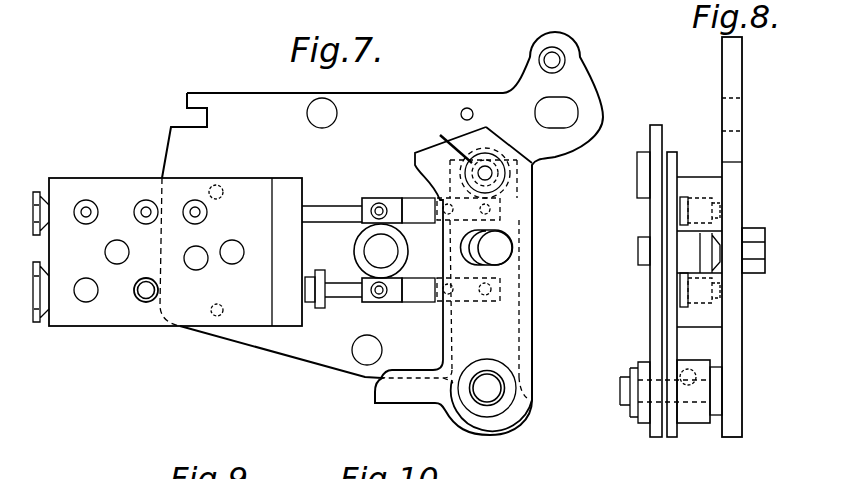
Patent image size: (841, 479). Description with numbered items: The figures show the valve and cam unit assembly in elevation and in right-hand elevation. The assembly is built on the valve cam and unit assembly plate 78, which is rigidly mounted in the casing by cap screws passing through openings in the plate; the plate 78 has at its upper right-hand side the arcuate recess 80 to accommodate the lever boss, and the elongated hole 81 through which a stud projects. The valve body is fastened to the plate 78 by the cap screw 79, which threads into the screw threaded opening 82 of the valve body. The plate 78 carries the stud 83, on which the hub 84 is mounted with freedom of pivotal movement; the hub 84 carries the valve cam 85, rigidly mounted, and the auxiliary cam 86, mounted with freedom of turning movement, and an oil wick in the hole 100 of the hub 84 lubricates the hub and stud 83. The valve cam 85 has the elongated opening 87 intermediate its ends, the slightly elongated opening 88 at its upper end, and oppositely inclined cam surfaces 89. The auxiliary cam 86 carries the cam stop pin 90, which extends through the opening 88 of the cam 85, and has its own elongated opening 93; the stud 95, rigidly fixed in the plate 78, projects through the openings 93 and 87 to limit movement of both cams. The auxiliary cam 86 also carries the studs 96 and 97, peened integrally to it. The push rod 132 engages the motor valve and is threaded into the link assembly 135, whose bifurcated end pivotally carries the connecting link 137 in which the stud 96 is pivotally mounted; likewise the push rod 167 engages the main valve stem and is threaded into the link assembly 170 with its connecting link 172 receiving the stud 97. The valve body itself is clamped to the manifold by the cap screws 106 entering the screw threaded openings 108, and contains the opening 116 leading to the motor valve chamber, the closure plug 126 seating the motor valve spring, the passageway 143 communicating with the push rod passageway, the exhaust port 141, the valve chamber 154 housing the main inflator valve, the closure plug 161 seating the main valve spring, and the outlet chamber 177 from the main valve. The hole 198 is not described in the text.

In FIG. 7, the valve cam and unit assembly plate 78 is at (428, 93).
In FIG. 8, the valve cam and unit assembly plate 78 is at (743, 345).
In FIG. 8, the cap screw 79 is at (758, 255).
In FIG. 7, the arcuate recess 80 is at (500, 207).
In FIG. 7, the elongated hole 81 is at (536, 118).
In FIG. 8, the elongated hole 81 is at (736, 100).
In FIG. 7, the screw threaded opening 82 is at (196, 270).
In FIG. 7, the stud 83 is at (501, 392).
In FIG. 8, the stud 83 is at (688, 425).
In FIG. 8, the hub 84 is at (703, 423).
In FIG. 7, the valve cam 85 is at (533, 335).
In FIG. 8, the valve cam 85 is at (652, 315).
In FIG. 7, the auxiliary cam 86 is at (522, 353).
In FIG. 8, the auxiliary cam 86 is at (677, 158).
In FIG. 7, the elongated opening 87 is at (512, 252).
In FIG. 7, the slightly elongated opening 88 is at (442, 140).
In FIG. 7, the cam surface 89 is at (475, 112).
In FIG. 7, the cam stop pin 90 is at (486, 170).
In FIG. 8, the cam stop pin 90 is at (637, 173).
In FIG. 7, the elongated opening 93 is at (462, 253).
In FIG. 7, the stud 95 is at (497, 247).
In FIG. 8, the stud 95 is at (640, 255).
In FIG. 7, the stud 96 is at (488, 208).
In FIG. 8, the stud 96 is at (712, 210).
In FIG. 7, the stud 97 is at (491, 290).
In FIG. 8, the stud 97 is at (712, 290).
In FIG. 7, the hole 100 is at (493, 372).
In FIG. 8, the hole 100 is at (689, 370).
In FIG. 7, the cap screws 106 is at (255, 190).
In FIG. 7, the screw threaded openings 108 is at (124, 251).
In FIG. 7, the opening 116 is at (86, 224).
In FIG. 7, the closure plug 126 is at (36, 215).
In FIG. 7, the push rod 132 is at (331, 212).
In FIG. 7, the link assembly 135 is at (380, 204).
In FIG. 8, the connecting link 137 is at (712, 200).
In FIG. 7, the exhaust port 141 is at (200, 212).
In FIG. 7, the passageway 143 is at (139, 205).
In FIG. 7, the valve chamber 154 is at (96, 297).
In FIG. 7, the closure plug 161 is at (36, 290).
In FIG. 7, the push rod 167 is at (349, 290).
In FIG. 7, the link assembly 170 is at (405, 300).
In FIG. 8, the connecting link 172 is at (706, 303).
In FIG. 7, the outlet chamber 177 is at (146, 302).
In FIG. 7, the hole 198 is at (565, 60).